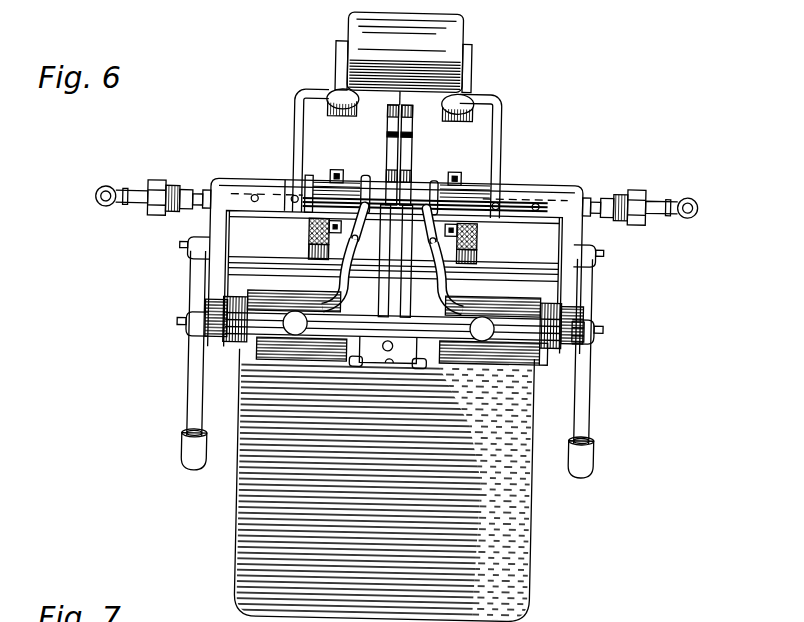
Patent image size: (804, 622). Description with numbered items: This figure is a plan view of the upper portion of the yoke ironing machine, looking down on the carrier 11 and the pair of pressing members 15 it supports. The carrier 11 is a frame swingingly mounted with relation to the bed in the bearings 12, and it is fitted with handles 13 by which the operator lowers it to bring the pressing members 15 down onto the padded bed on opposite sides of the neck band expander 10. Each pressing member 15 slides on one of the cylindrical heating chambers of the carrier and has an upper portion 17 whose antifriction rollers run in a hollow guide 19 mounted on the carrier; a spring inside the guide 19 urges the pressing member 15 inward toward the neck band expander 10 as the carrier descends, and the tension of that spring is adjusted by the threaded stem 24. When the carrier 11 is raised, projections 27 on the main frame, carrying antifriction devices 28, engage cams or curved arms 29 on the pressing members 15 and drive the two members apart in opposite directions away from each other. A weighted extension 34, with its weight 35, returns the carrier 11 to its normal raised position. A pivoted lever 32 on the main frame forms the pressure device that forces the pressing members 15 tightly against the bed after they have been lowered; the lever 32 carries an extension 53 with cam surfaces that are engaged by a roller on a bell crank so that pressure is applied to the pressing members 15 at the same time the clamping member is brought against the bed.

The neck band expander 10 is at (402, 355).
The carrier 11 is at (222, 280).
The bearings 12 is at (309, 184).
The handles 13 is at (183, 457).
The pressing member 15 is at (455, 408).
The upper portion 17 is at (236, 349).
The guide 19 is at (540, 356).
The threaded stem 24 is at (590, 325).
The projections 27 is at (309, 222).
The antifriction devices 28 is at (359, 239).
The curved arms 29 is at (332, 290).
The pivoted lever 32 is at (418, 364).
The extension 34 is at (292, 146).
The weight 35 is at (447, 34).
The extension 53 is at (392, 152).